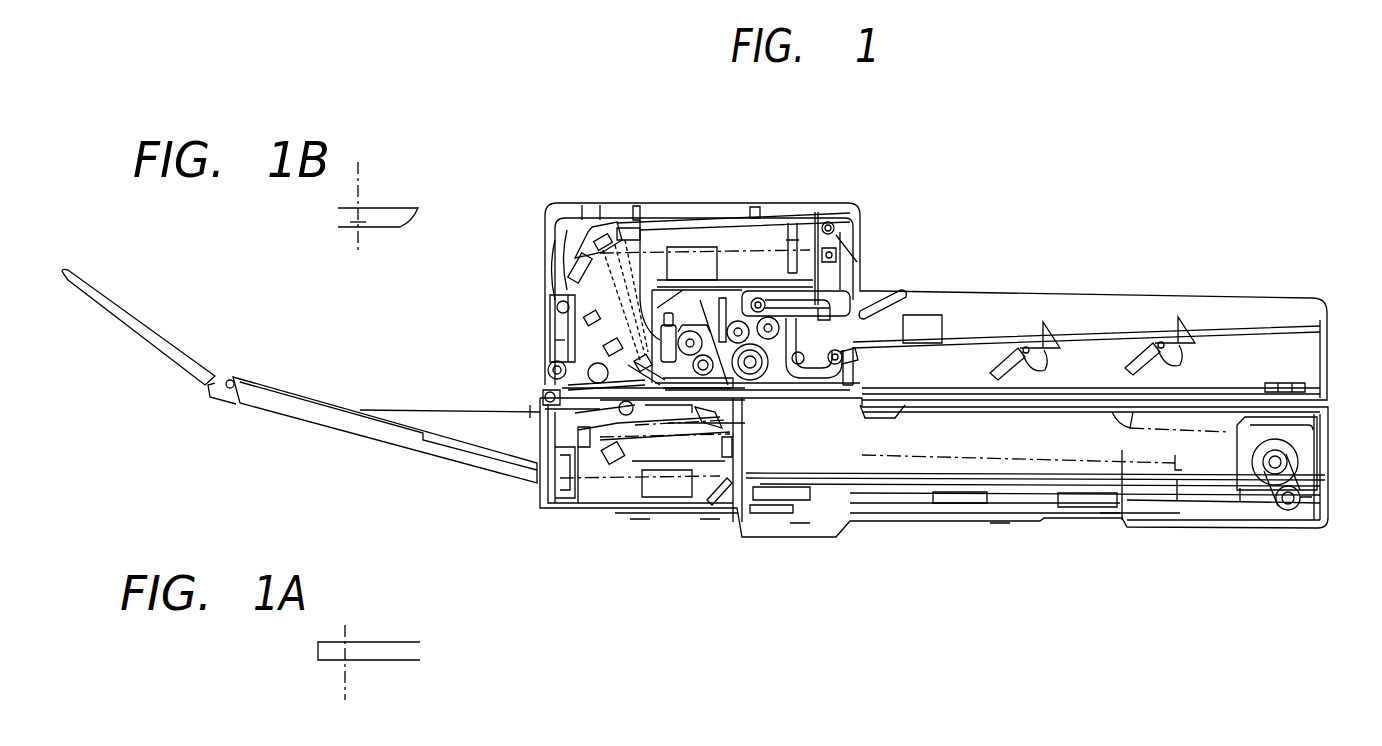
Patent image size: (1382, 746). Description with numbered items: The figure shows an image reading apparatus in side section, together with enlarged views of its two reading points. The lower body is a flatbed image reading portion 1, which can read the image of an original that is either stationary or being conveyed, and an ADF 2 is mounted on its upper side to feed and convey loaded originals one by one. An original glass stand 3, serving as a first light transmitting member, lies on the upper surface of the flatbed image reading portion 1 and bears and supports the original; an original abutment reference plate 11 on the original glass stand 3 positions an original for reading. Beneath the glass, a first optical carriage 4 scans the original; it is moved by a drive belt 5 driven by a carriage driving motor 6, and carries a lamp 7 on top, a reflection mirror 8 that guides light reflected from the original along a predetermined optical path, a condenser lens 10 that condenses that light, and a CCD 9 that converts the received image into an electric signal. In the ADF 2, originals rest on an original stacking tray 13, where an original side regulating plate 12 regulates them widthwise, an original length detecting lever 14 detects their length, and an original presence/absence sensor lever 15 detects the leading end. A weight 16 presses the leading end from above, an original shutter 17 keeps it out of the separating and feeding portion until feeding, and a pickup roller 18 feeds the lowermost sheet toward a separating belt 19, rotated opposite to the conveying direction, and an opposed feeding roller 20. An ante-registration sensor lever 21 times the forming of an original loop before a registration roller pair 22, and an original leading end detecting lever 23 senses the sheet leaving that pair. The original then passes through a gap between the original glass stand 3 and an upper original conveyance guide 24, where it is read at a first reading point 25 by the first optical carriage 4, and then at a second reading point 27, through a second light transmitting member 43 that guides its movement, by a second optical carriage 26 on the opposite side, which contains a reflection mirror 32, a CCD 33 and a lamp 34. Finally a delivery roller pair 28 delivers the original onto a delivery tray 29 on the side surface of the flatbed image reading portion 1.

In FIG. 1, the flatbed image reading portion 1 is at (1333, 462).
In FIG. 1, the ADF 2 is at (1330, 350).
In FIG. 1, the original glass stand 3 is at (1100, 410).
In FIG. 1, the first optical carriage 4 is at (620, 520).
In FIG. 1, the drive belt 5 is at (1215, 515).
In FIG. 1, the carriage driving motor 6 is at (1247, 480).
In FIG. 1, the lamp 7 is at (640, 520).
In FIG. 1, the reflection mirror 8 is at (725, 520).
In FIG. 1, the CCD 9 is at (555, 520).
In FIG. 1, the condenser lens 10 is at (690, 520).
In FIG. 1, the original abutment reference plate 11 is at (655, 520).
In FIG. 1, the original side regulating plate 12 is at (945, 300).
In FIG. 1, the original stacking tray 13 is at (1165, 340).
In FIG. 1, the original length detecting lever 14 is at (1055, 340).
In FIG. 1, the original presence/absence sensor lever 15 is at (880, 300).
In FIG. 1, the weight 16 is at (860, 240).
In FIG. 1, the original shutter 17 is at (828, 385).
In FIG. 1, the pickup roller 18 is at (795, 380).
In FIG. 1, the separating belt 19 is at (745, 260).
In FIG. 1, the feeding roller 20 is at (760, 385).
In FIG. 1, the ante-registration sensor lever 21 is at (745, 375).
In FIG. 1, the registration roller pair 22 is at (745, 520).
In FIG. 1, the original leading end detecting lever 23 is at (618, 340).
In FIG. 1, the upper original conveyance guide 24 is at (612, 318).
In FIG. 1, the first reading point 25 is at (590, 375).
In FIG. 1A, the first reading point 25 is at (347, 640).
In FIG. 1, the second optical carriage 26 is at (692, 250).
In FIG. 1, the second reading point 27 is at (575, 510).
In FIG. 1B, the second reading point 27 is at (356, 232).
In FIG. 1, the delivery roller pair 28 is at (575, 385).
In FIG. 1, the delivery tray 29 is at (342, 428).
In FIG. 1, the reflection mirror 32 is at (563, 210).
In FIG. 1, the CCD 33 is at (782, 250).
In FIG. 1, the lamp 34 is at (560, 330).
In FIG. 1, the second light transmitting member 43 is at (575, 370).
In FIG. 1B, the second light transmitting member 43 is at (390, 210).